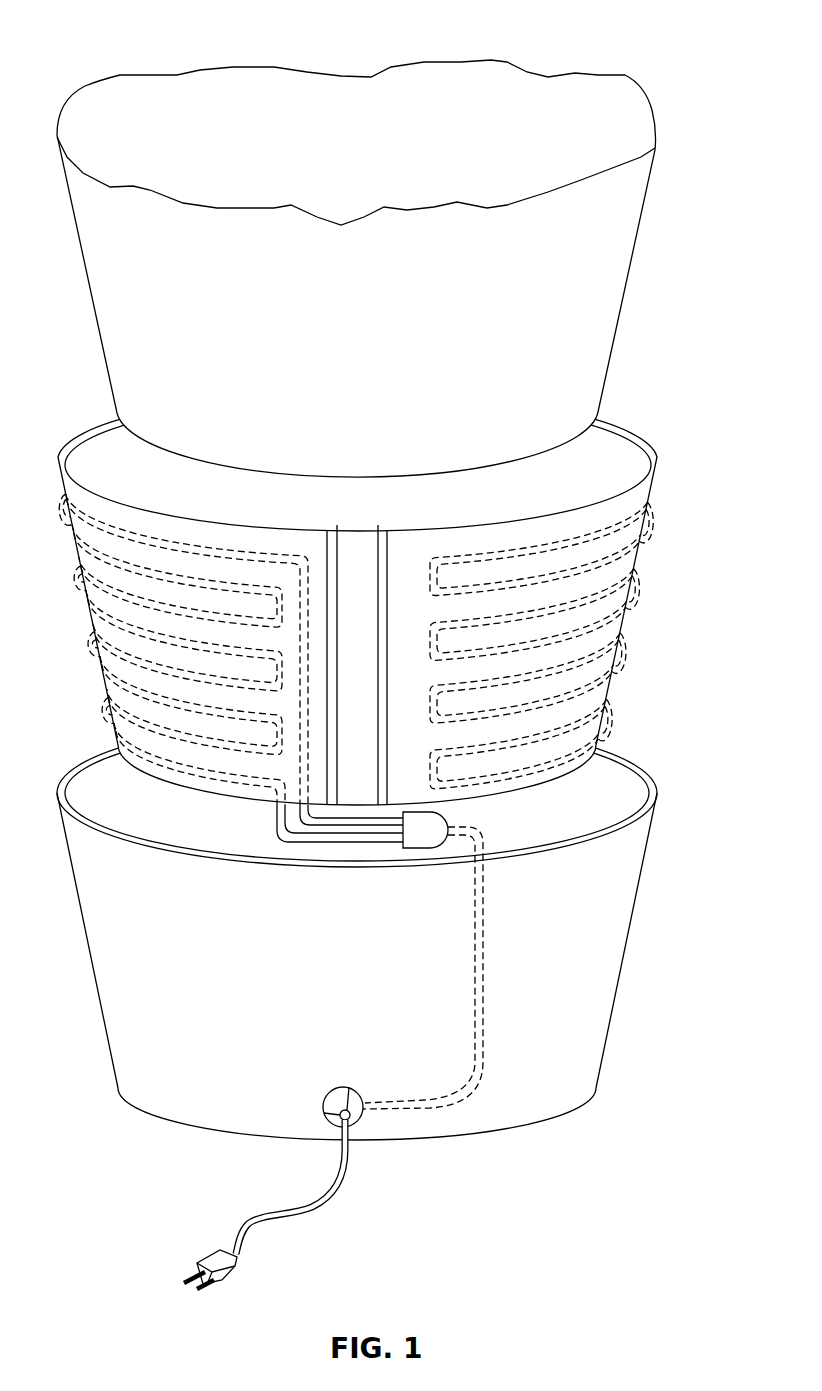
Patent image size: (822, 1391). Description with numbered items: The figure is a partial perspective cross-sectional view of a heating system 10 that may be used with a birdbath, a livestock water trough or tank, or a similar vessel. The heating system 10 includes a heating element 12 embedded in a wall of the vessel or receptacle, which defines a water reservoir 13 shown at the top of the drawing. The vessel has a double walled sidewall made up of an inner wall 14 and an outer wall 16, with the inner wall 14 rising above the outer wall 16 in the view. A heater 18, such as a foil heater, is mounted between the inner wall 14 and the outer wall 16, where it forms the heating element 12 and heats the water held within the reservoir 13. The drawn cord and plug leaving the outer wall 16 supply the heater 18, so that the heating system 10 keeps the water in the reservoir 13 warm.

The heating system 10 is at (362, 646).
The heating element 12 is at (622, 672).
The water reservoir 13 is at (601, 95).
The inner wall 14 is at (597, 345).
The outer wall 16 is at (608, 985).
The heater 18 is at (618, 602).